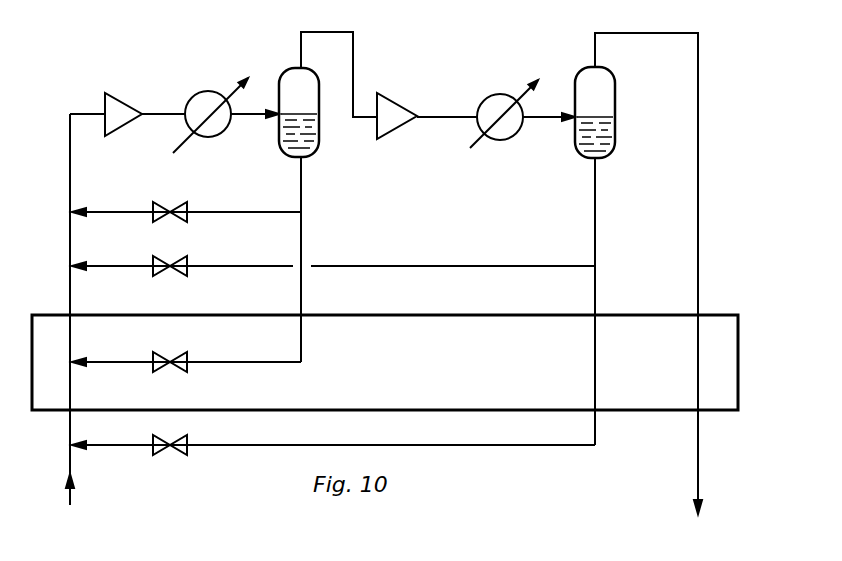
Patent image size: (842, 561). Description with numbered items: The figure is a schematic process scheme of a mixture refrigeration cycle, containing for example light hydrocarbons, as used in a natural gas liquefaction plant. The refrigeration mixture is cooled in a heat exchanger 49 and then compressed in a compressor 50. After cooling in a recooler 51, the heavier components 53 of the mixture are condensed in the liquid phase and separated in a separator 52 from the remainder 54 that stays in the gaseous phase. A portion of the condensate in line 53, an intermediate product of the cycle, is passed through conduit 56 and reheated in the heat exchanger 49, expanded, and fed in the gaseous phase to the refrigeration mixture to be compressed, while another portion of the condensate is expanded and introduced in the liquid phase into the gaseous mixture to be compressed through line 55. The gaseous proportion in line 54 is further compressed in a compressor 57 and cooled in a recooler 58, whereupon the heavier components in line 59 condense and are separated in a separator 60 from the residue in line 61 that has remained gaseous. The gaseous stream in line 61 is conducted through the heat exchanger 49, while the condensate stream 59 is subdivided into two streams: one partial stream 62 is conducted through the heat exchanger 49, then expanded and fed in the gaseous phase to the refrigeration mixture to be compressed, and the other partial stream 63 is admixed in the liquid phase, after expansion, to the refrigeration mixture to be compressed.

The heat exchanger 49 is at (722, 402).
The compressor 50 is at (133, 100).
The recooler 51 is at (207, 99).
The separator 52 is at (318, 143).
The heavier components (condensate line) 53 is at (303, 200).
The remainder (gaseous proportion line) 54 is at (337, 32).
The line 55 is at (138, 210).
The conduit 56 is at (138, 360).
The compressor 57 is at (387, 98).
The recooler 58 is at (500, 100).
The heavier components (condensate stream line) 59 is at (594, 222).
The separator 60 is at (603, 100).
The residue (gaseous stream line) 61 is at (700, 172).
The partial stream 62 is at (138, 443).
The partial stream 63 is at (138, 263).